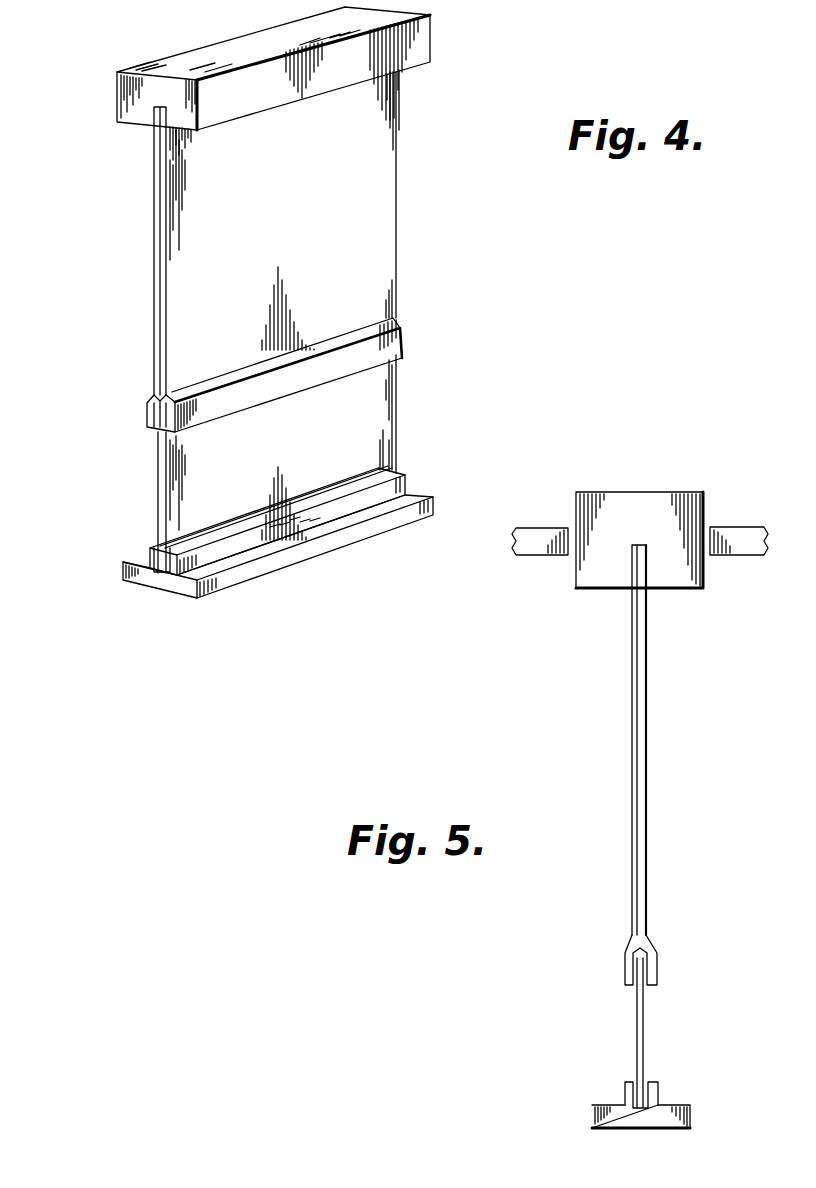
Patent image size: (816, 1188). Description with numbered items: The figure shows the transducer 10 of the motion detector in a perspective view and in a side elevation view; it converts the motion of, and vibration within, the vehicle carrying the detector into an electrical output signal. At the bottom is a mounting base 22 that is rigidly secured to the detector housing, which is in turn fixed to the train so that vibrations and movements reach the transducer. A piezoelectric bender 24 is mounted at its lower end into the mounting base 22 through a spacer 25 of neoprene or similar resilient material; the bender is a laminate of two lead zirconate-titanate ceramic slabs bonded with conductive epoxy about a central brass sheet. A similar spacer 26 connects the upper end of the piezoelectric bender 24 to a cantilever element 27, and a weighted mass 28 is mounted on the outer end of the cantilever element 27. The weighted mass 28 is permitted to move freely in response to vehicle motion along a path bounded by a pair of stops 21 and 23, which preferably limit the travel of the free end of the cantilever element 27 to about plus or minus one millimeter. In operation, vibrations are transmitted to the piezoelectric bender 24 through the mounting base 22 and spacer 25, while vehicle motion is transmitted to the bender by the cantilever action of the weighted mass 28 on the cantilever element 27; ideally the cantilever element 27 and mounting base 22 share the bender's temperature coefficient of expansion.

In FIG. 4, the transducer 10 is at (136, 282).
In FIG. 5, the transducer 10 is at (620, 743).
In FIG. 5, the stop 21 is at (538, 538).
In FIG. 4, the mounting base 22 is at (252, 570).
In FIG. 5, the mounting base 22 is at (597, 1110).
In FIG. 5, the stop 23 is at (728, 538).
In FIG. 4, the piezoelectric bender 24 is at (390, 415).
In FIG. 5, the piezoelectric bender 24 is at (642, 1060).
In FIG. 4, the spacer 25 is at (168, 578).
In FIG. 5, the spacer 25 is at (647, 1087).
In FIG. 4, the spacer 26 is at (150, 415).
In FIG. 5, the spacer 26 is at (645, 973).
In FIG. 4, the cantilever element 27 is at (388, 272).
In FIG. 5, the cantilever element 27 is at (647, 818).
In FIG. 4, the weighted mass 28 is at (190, 60).
In FIG. 5, the weighted mass 28 is at (620, 507).